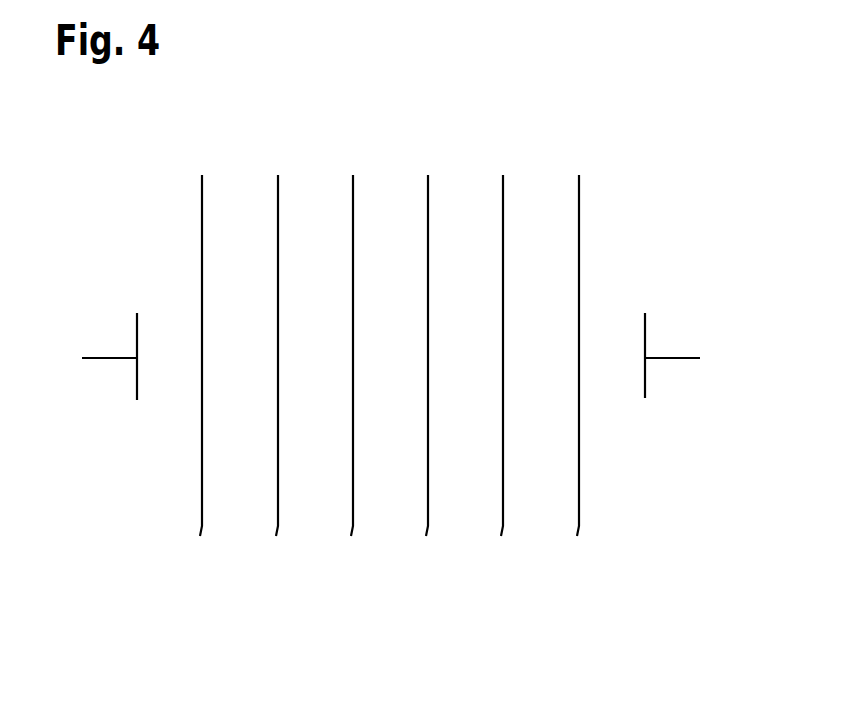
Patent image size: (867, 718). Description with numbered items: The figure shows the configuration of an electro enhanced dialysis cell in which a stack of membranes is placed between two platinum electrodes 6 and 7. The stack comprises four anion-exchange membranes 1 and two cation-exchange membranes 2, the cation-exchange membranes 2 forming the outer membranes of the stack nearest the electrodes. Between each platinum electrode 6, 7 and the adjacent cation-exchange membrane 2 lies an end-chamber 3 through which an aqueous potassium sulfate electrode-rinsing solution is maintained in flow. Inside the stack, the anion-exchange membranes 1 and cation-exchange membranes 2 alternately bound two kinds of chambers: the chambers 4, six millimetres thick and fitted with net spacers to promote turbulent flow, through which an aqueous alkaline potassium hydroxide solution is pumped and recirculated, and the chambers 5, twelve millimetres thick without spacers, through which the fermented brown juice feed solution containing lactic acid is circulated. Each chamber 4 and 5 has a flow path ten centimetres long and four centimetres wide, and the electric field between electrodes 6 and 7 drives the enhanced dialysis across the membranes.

The anion-exchange membrane 1 is at (278, 531).
The cation-exchange membrane 2 is at (202, 531).
The end-chamber 3 is at (392, 222).
The chamber 4 is at (386, 222).
The chamber 5 is at (387, 222).
The platinum electrode 6 is at (83, 359).
The platinum electrode 7 is at (700, 359).